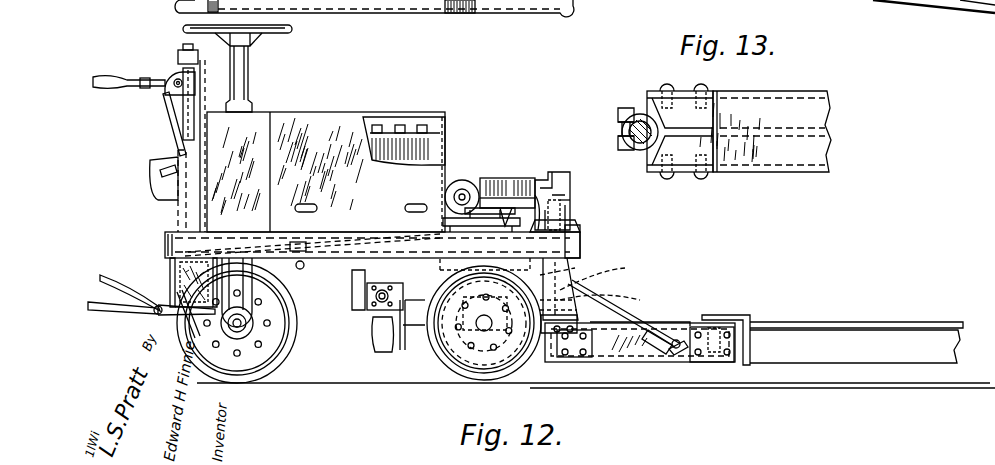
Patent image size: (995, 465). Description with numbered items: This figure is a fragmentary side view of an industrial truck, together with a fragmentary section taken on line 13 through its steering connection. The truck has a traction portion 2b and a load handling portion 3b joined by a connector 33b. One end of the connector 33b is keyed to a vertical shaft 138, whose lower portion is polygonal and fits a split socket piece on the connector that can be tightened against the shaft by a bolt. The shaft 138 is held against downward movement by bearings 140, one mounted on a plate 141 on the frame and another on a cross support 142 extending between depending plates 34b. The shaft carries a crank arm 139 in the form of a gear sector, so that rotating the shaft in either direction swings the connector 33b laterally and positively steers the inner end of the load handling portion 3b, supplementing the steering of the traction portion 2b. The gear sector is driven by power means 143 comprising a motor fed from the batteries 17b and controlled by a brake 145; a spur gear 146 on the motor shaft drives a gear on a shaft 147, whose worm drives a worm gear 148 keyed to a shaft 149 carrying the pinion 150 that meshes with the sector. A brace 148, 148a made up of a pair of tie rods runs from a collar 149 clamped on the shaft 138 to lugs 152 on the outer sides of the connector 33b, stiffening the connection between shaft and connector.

In FIG. 12, the traction portion 2b is at (330, 268).
In FIG. 12, the load handling portion 3b is at (855, 322).
In FIG. 12, the section line 13— 13 is at (668, 330).
In FIG. 12, the batteries 17b is at (438, 118).
In FIG. 12, the connector 33b is at (676, 362).
In FIG. 13, the connector 33b is at (788, 128).
In FIG. 12, the depending plates 34b is at (609, 274).
In FIG. 12, the shaft 138 is at (575, 288).
In FIG. 13, the shaft 138 is at (631, 150).
In FIG. 12, the crank arm 139 is at (550, 180).
In FIG. 12, the bearing 140 is at (570, 205).
In FIG. 12, the plate 141 is at (578, 230).
In FIG. 12, the cross support 142 is at (590, 326).
In FIG. 12, the power means 143 is at (496, 186).
In FIG. 12, the brake 145 is at (452, 185).
In FIG. 12, the spur gear 146 is at (448, 203).
In FIG. 12, the shaft 147 is at (462, 232).
In FIG. 12, the brace 148 is at (615, 296).
In FIG. 12, the brace link 148a is at (602, 299).
In FIG. 12, the shaft 149 is at (580, 266).
In FIG. 12, the pinion 150 is at (500, 178).
In FIG. 12, the lugs 152 is at (690, 322).